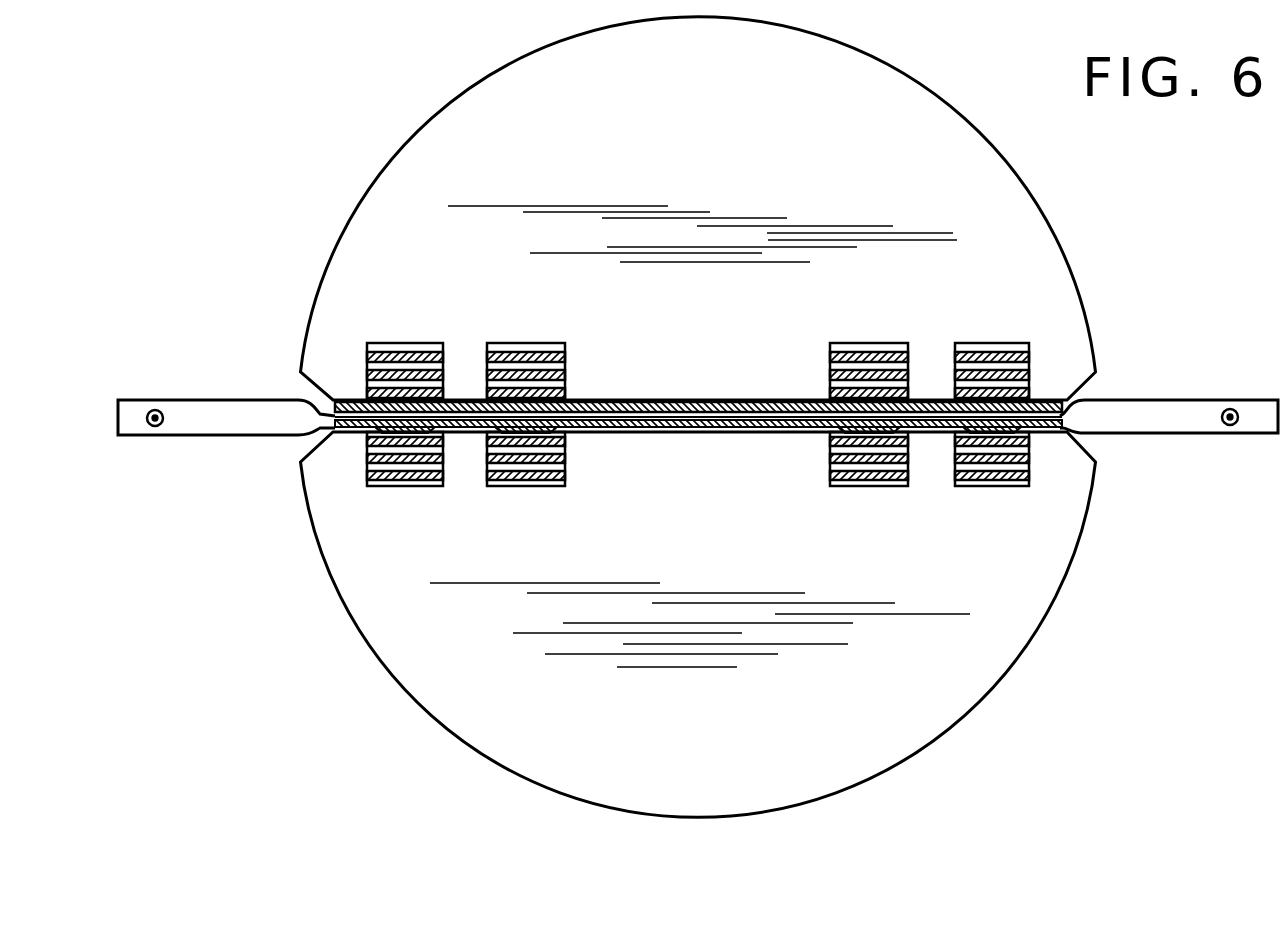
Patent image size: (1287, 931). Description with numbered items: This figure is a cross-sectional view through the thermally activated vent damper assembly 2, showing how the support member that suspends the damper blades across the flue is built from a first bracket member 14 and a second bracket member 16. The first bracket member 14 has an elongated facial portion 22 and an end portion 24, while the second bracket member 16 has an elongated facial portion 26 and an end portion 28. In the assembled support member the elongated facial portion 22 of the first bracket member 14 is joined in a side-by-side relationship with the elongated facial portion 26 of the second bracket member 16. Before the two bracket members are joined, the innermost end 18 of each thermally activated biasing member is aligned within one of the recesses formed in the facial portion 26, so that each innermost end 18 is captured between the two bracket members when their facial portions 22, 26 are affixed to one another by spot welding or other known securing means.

The thermally activated vent damper assembly 2 is at (280, 121).
The first bracket member 14 is at (1139, 384).
The second bracket member 16 is at (236, 452).
The innermost end 18 is at (830, 446).
The elongated facial portion 22 is at (683, 403).
The end portion 24 is at (1194, 430).
The elongated facial portion 26 is at (683, 432).
The end portion 28 is at (215, 412).